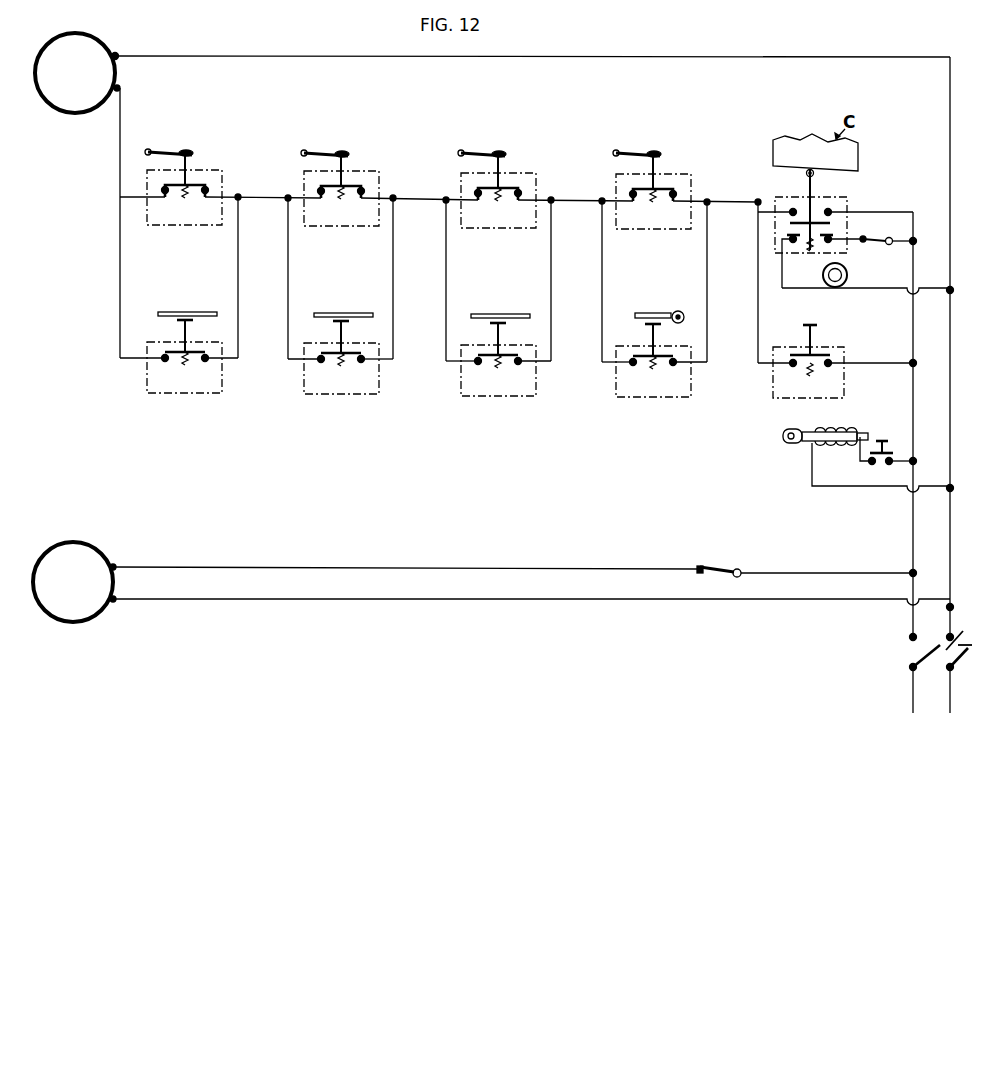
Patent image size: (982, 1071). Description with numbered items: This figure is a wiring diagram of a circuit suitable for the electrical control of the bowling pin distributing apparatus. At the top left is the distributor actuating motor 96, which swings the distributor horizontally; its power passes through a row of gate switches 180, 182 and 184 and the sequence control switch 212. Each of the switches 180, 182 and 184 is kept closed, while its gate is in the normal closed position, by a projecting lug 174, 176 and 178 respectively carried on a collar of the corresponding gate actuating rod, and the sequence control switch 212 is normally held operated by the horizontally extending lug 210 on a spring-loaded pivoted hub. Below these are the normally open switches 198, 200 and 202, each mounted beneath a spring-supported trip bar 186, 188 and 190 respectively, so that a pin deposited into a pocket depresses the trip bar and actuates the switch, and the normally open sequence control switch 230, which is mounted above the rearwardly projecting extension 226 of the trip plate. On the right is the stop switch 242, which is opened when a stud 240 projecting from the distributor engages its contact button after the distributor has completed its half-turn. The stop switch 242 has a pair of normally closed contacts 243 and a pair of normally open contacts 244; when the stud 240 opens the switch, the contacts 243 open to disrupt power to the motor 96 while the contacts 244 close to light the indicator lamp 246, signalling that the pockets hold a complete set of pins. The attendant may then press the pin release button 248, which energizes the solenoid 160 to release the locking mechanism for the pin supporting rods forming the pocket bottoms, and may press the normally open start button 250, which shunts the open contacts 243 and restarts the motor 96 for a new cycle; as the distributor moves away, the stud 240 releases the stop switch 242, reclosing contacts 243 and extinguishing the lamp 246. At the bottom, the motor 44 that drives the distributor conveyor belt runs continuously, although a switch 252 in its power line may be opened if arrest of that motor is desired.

The distributor actuating motor 96 is at (103, 45).
The motor 44 is at (101, 554).
The projecting lug 174 is at (194, 153).
The projecting lug 176 is at (346, 154).
The projecting lug 178 is at (498, 154).
The horizontally extending lug 210 is at (661, 154).
The switch 180 is at (198, 227).
The switch 182 is at (354, 228).
The switch 184 is at (512, 228).
The sequence control switch 212 is at (665, 228).
The trip bar 186 is at (203, 312).
The trip bar 188 is at (355, 312).
The trip bar 190 is at (514, 314).
The rearwardly projecting extension 226 is at (670, 313).
The normally open switch 198 is at (178, 395).
The normally open switch 200 is at (333, 396).
The normally open switch 202 is at (474, 398).
The sequence control switch 230 is at (633, 398).
The stud 240 is at (801, 173).
The stop switch 242 is at (848, 200).
The normally closed contacts 243 is at (848, 215).
The normally open contacts 244 is at (833, 244).
The indicator lamp 246 is at (848, 274).
The start button 250 is at (817, 325).
The solenoid 160 is at (830, 430).
The pin release button 248 is at (882, 441).
The switch 252 is at (721, 566).